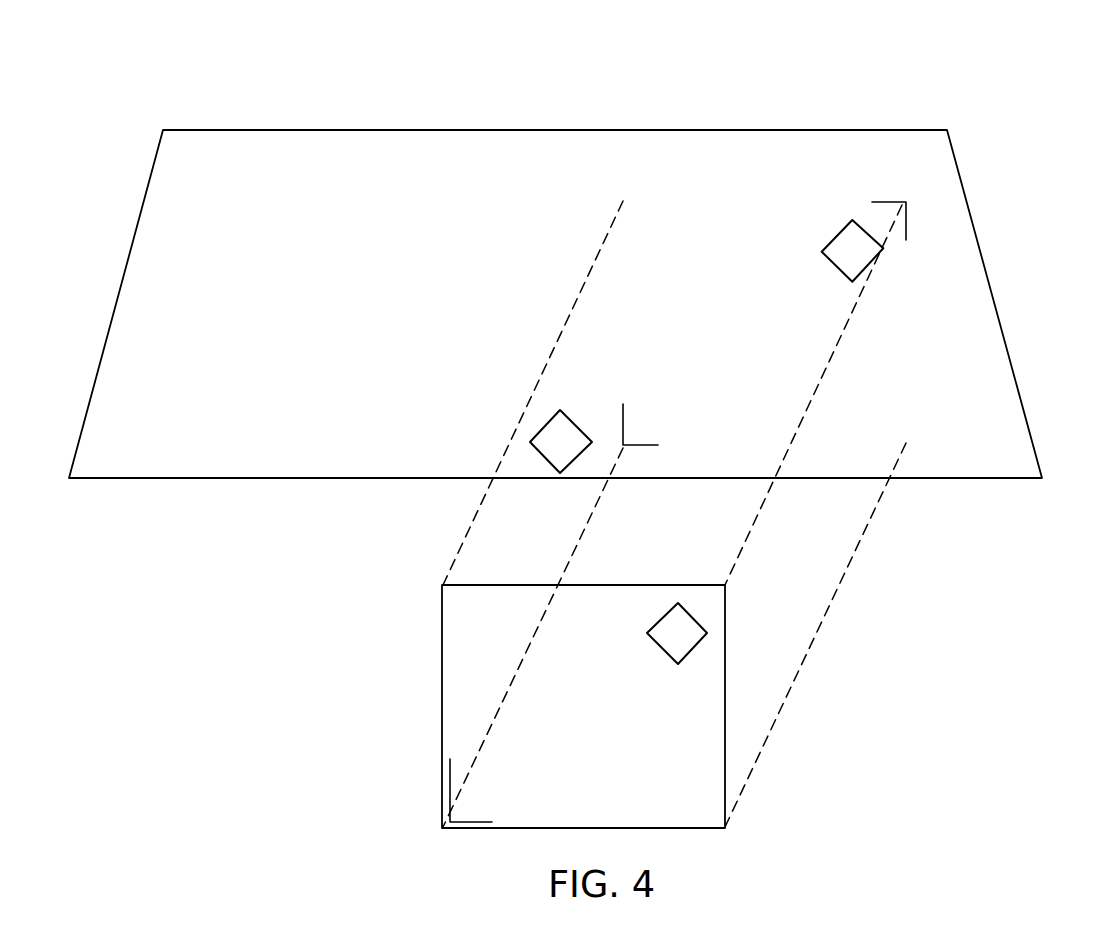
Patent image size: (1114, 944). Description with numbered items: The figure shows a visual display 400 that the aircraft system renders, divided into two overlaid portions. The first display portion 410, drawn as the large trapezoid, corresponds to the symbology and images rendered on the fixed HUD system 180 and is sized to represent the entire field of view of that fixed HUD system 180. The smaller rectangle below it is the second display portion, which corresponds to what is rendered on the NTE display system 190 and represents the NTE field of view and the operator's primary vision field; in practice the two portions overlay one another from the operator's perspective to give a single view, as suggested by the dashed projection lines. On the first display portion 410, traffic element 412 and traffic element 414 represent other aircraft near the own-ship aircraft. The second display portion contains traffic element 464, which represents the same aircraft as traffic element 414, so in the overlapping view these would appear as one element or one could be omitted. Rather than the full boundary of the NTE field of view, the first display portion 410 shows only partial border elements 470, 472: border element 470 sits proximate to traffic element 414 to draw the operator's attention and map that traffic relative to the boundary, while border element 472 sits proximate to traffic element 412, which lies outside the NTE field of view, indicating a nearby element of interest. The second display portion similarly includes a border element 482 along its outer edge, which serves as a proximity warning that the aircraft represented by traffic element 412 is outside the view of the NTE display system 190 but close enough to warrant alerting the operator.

The visual display 400 is at (823, 102).
The fixed HUD system 180 is at (1040, 236).
The first display portion 410 is at (973, 210).
The traffic element 412 is at (574, 418).
The traffic element 414 is at (832, 239).
The partial border element 470 is at (906, 231).
The partial border element 472 is at (658, 445).
The NTE display system 190 is at (422, 724).
The traffic element 464 is at (662, 651).
The border element 482 is at (492, 822).